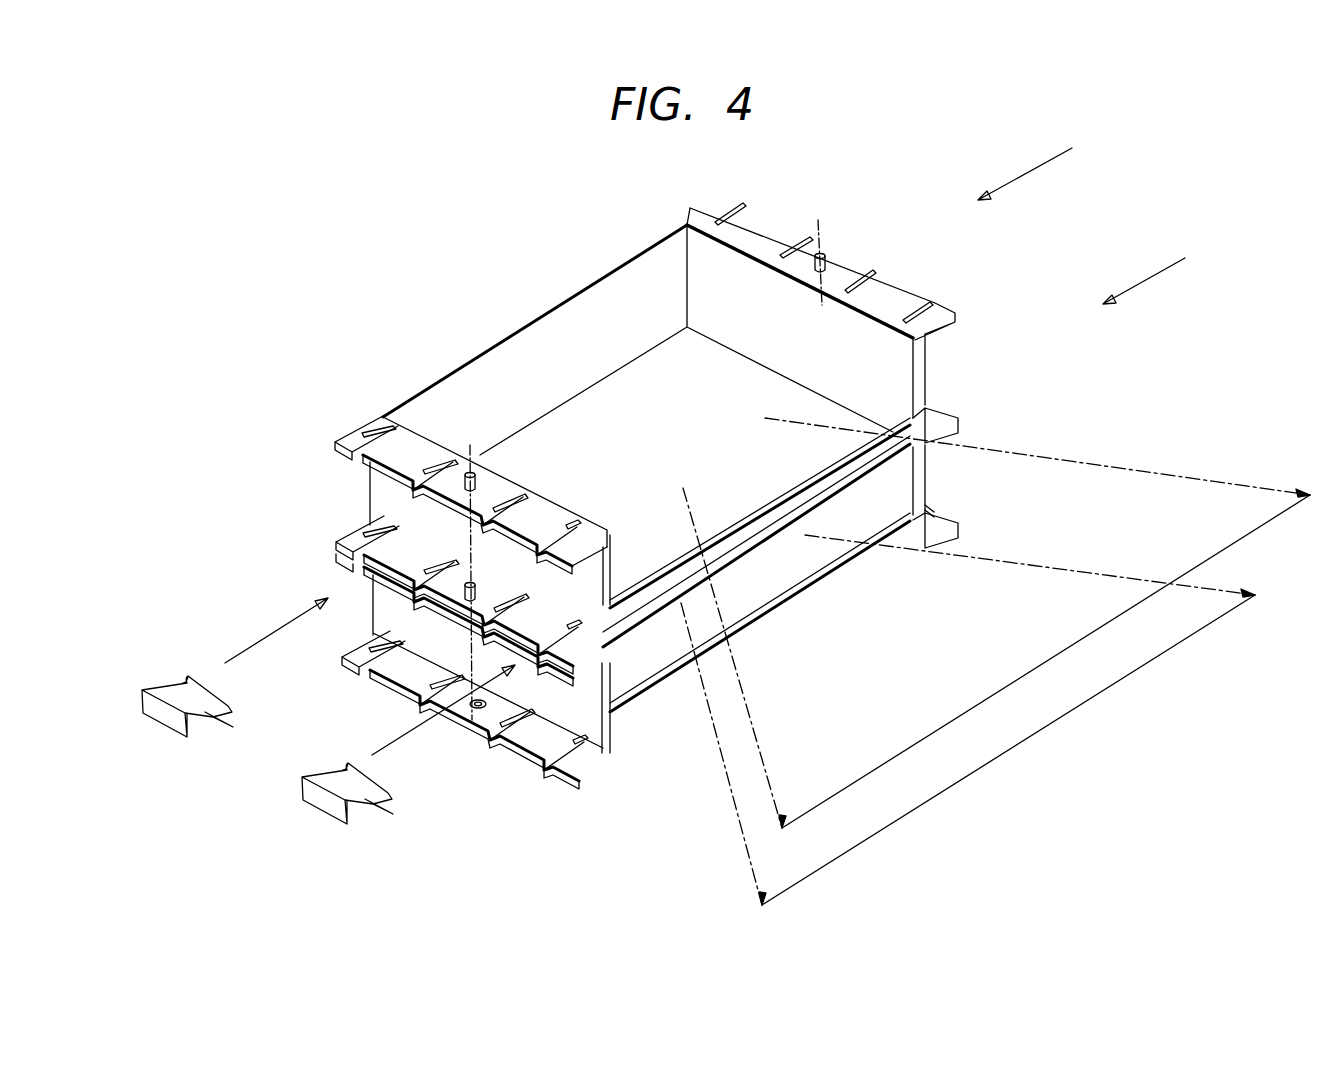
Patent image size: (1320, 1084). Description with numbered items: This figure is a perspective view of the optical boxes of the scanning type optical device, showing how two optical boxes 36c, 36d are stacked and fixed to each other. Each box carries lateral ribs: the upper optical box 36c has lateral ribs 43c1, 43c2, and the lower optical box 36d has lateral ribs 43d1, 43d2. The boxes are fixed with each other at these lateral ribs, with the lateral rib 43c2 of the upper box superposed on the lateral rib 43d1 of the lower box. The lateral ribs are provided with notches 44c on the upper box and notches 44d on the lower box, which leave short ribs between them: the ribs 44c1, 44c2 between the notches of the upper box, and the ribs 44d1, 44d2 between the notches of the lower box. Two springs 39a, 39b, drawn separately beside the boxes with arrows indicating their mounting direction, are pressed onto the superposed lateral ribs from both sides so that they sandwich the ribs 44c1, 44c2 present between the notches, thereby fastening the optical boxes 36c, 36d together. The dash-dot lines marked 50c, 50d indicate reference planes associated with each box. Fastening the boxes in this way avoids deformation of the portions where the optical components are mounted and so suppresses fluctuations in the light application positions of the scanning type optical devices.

The optical box 36c is at (925, 355).
The optical box 36d is at (926, 493).
The spring 39a is at (330, 808).
The spring 39b is at (165, 718).
The lateral rib 43c1 is at (712, 205).
The lateral rib 43c2 is at (958, 416).
The lateral rib 43d1 is at (962, 435).
The lateral rib 43d2 is at (962, 534).
The notch 44c is at (930, 300).
The rib 44c1 is at (780, 240).
The rib 44c2 is at (880, 285).
The notch 44d is at (388, 663).
The rib 44d1 is at (383, 615).
The rib 44d2 is at (948, 520).
The reference plane 50c is at (1190, 474).
The reference plane 50d is at (1238, 586).